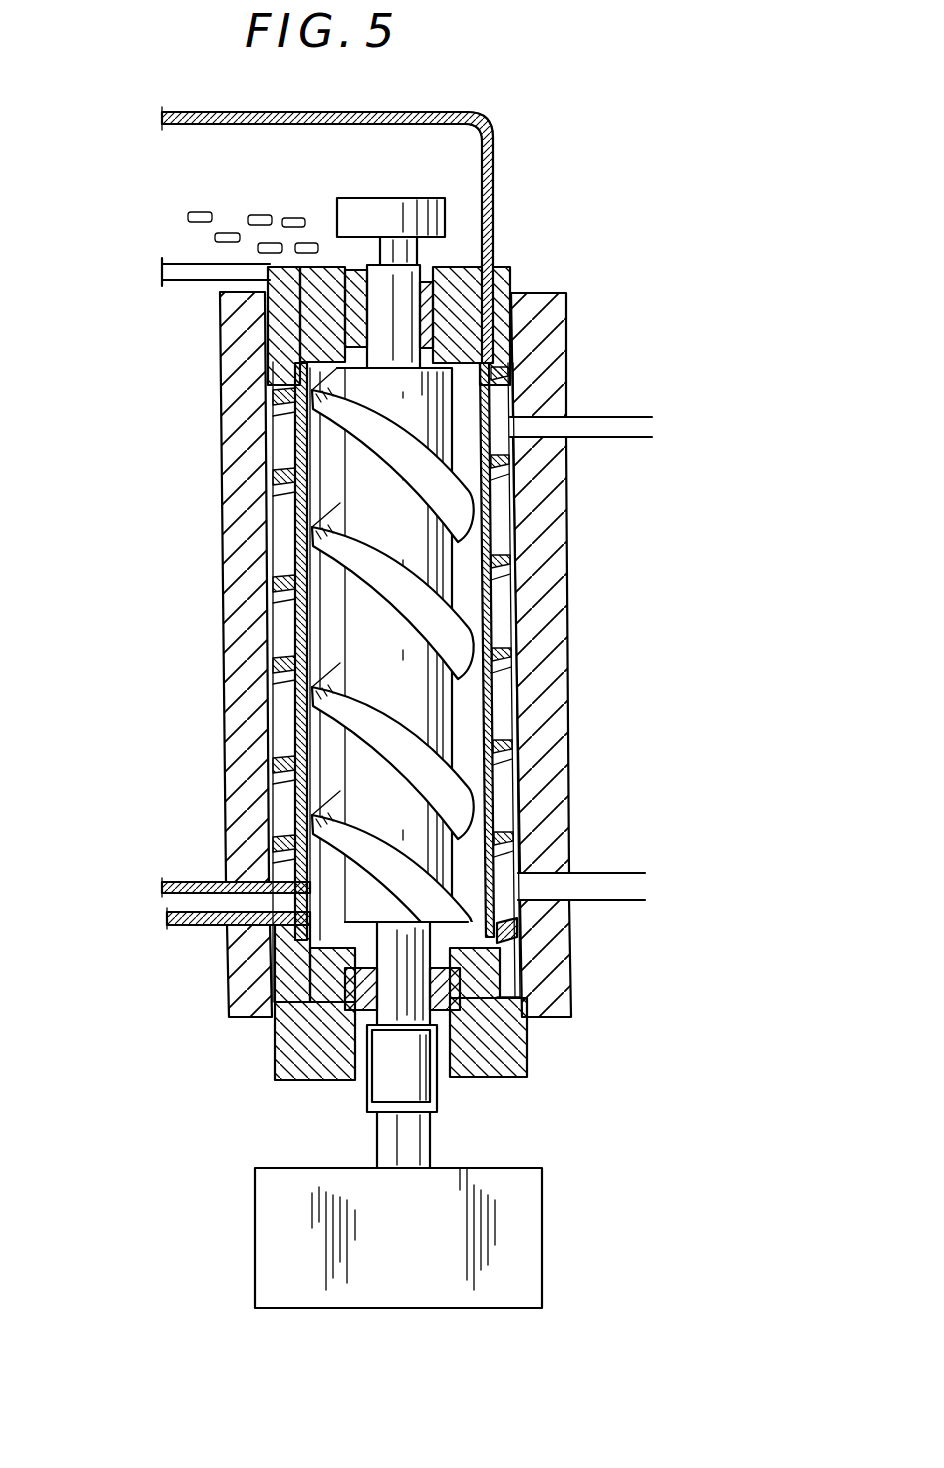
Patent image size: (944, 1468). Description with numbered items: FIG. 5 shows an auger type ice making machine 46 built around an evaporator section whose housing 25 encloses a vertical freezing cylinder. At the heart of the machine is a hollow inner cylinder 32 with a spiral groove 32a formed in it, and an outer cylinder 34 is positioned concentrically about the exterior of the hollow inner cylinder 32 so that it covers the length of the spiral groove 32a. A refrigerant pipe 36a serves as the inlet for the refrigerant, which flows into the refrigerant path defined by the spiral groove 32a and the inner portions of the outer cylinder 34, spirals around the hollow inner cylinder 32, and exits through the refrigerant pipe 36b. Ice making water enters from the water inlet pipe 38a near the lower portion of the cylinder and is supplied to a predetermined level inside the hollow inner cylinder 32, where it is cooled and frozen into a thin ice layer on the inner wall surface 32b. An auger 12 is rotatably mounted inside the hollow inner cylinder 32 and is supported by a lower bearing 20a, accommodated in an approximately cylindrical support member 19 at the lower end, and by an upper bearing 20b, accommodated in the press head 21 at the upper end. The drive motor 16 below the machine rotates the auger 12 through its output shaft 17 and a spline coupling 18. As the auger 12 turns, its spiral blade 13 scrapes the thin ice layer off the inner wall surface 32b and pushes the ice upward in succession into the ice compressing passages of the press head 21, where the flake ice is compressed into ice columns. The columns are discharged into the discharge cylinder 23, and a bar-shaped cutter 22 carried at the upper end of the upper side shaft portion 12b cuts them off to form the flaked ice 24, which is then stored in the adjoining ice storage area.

The extruder apparatus 46 is at (150, 616).
The housing 25 is at (547, 578).
The press head 21 is at (540, 322).
The outer cylinder 34 is at (518, 687).
The upper bearing 20b is at (478, 288).
The discharge cylinder 23 is at (415, 110).
The cutter 22 is at (447, 215).
The upper side shaft portion 12b is at (415, 270).
The flaked ice 24 is at (190, 212).
The spiral blade 13 is at (292, 811).
The hollow inner cylinder 32 is at (500, 355).
The spiral groove 32a is at (497, 520).
The inner wall surface 32b is at (515, 820).
The auger 12 is at (420, 712).
The lower bearing 20a is at (453, 985).
The support member 19 is at (502, 1045).
The output shaft 17 is at (405, 1138).
The spline coupling 18 is at (427, 1090).
The drive motor 16 is at (240, 1232).
The water inlet pipe 38a is at (193, 922).
The refrigerant pipe 36b is at (623, 412).
The refrigerant pipe 36a is at (620, 870).